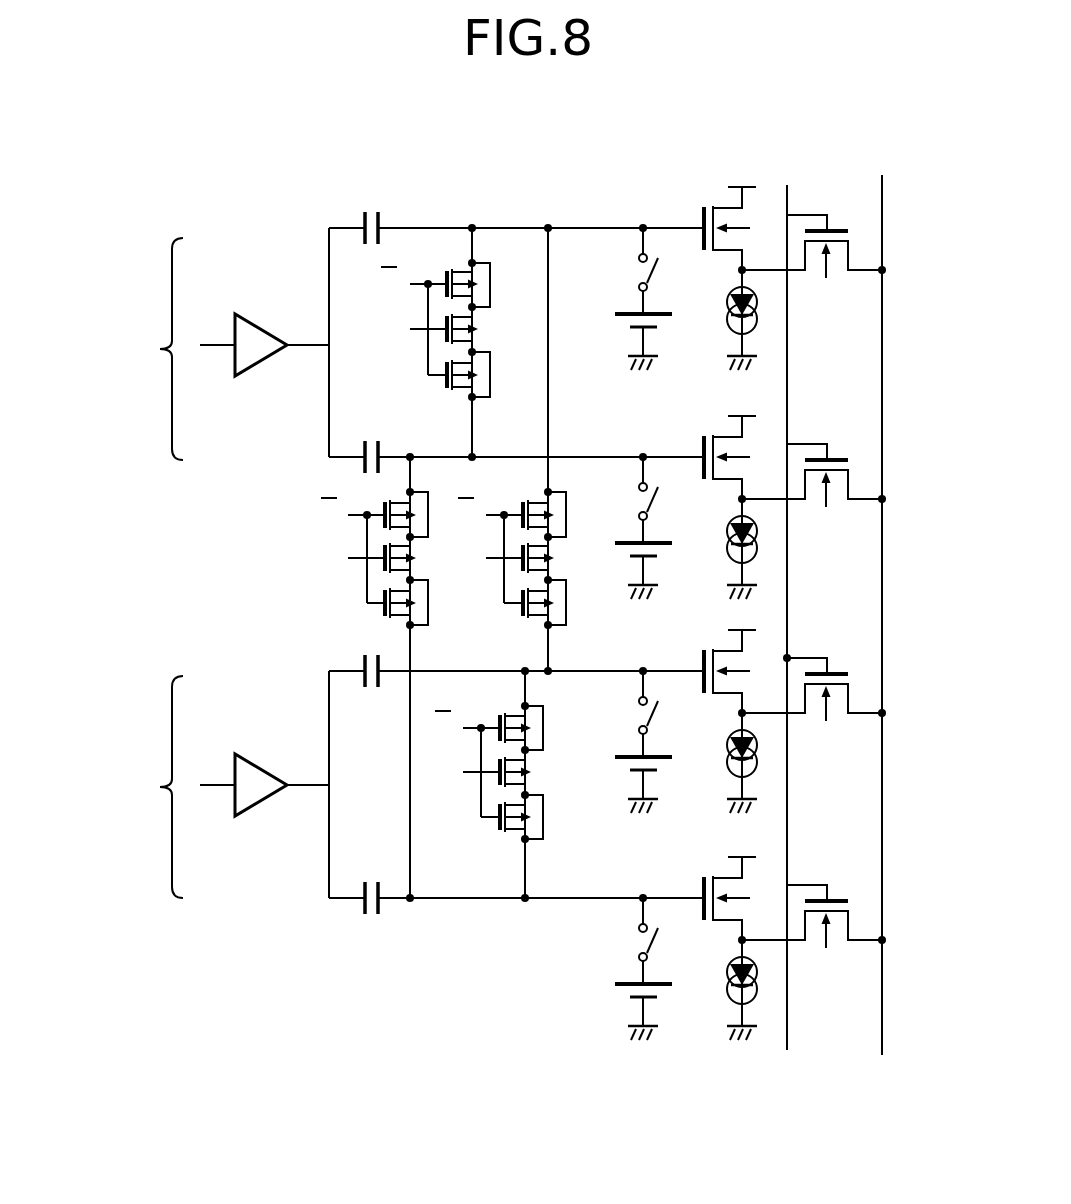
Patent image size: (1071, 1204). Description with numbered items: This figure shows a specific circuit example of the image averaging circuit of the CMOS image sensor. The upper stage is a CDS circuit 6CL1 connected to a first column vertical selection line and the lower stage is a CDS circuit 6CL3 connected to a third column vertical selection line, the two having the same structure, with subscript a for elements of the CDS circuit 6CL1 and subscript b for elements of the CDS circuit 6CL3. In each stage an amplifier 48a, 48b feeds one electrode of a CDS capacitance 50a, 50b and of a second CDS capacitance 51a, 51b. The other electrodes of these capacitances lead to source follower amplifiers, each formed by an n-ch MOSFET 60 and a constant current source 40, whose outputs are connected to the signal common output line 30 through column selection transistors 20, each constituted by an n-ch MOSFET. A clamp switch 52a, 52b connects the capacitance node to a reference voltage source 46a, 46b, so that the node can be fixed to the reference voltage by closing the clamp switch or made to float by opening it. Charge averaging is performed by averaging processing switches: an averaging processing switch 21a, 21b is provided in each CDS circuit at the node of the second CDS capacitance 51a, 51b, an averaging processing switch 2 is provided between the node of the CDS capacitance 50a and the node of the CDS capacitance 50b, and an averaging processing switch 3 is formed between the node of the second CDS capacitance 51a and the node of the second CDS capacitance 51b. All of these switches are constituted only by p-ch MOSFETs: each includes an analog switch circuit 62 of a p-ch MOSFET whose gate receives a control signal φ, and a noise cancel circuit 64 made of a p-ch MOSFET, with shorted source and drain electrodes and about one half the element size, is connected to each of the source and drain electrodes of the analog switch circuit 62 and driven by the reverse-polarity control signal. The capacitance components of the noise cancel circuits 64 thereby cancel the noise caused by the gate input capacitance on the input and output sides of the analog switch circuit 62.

The averaging processing switch 2 is at (302, 554).
The averaging processing switch 3 is at (493, 631).
The column selection transistor 20 is at (838, 221).
The averaging processing switch 21a is at (436, 390).
The averaging processing switch 21b is at (474, 831).
The signal common output line 30 is at (884, 222).
The constant current source 40 is at (727, 310).
The reference voltage source 46a is at (665, 324).
The reference voltage source 46b is at (665, 767).
The amplifier 48a is at (262, 325).
The amplifier 48b is at (262, 765).
The CDS capacitance 50a is at (368, 440).
The CDS capacitance 50b is at (372, 916).
The second CDS capacitance 51a is at (368, 212).
The second CDS capacitance 51b is at (370, 690).
The clamp switch 52a is at (637, 278).
The clamp switch 52b is at (637, 720).
The n-ch MOSFET 60 is at (700, 218).
The analog switch circuit 62 is at (494, 332).
The noise cancel circuit 64 is at (493, 285).
The CDS circuit 6CL1 is at (127, 349).
The CDS circuit 6CL3 is at (127, 787).